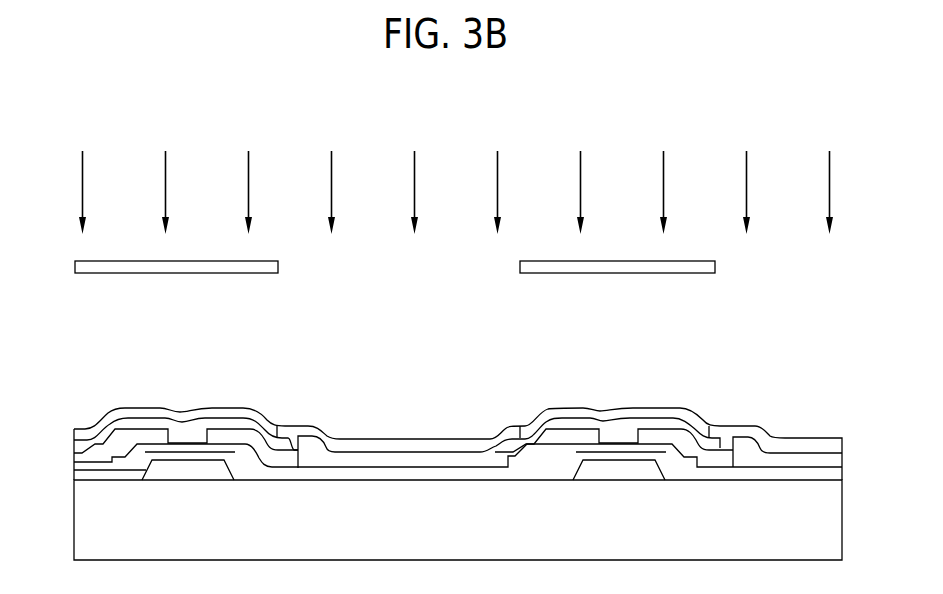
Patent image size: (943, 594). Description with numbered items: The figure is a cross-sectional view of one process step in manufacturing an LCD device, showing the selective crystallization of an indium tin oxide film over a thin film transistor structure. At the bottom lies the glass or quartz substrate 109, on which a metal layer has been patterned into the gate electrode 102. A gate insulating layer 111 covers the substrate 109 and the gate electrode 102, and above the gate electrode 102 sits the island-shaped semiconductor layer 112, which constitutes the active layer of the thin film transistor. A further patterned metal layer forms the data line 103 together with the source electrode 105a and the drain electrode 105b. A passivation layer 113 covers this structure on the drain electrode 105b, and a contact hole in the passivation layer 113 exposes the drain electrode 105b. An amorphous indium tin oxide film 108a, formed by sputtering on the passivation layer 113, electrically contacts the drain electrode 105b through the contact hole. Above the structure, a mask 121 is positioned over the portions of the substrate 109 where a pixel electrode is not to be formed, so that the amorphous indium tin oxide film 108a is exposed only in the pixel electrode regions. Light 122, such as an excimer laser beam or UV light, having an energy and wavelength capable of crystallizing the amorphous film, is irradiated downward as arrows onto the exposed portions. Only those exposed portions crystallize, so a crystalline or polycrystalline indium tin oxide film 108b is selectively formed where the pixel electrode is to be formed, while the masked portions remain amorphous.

The light 122 is at (834, 188).
The mask 121 is at (715, 271).
The substrate 109 is at (843, 522).
The gate insulating layer 111 is at (845, 477).
The gate electrode 102 is at (178, 472).
The source electrode 105a is at (145, 436).
The drain electrode 105b is at (280, 456).
The data line 103 is at (80, 466).
The island-shaped semiconductor layer 112 is at (199, 445).
The passivation layer 113 is at (89, 444).
The amorphous indium tin oxide film 108a is at (200, 410).
The crystalline indium tin oxide film 108b is at (412, 440).